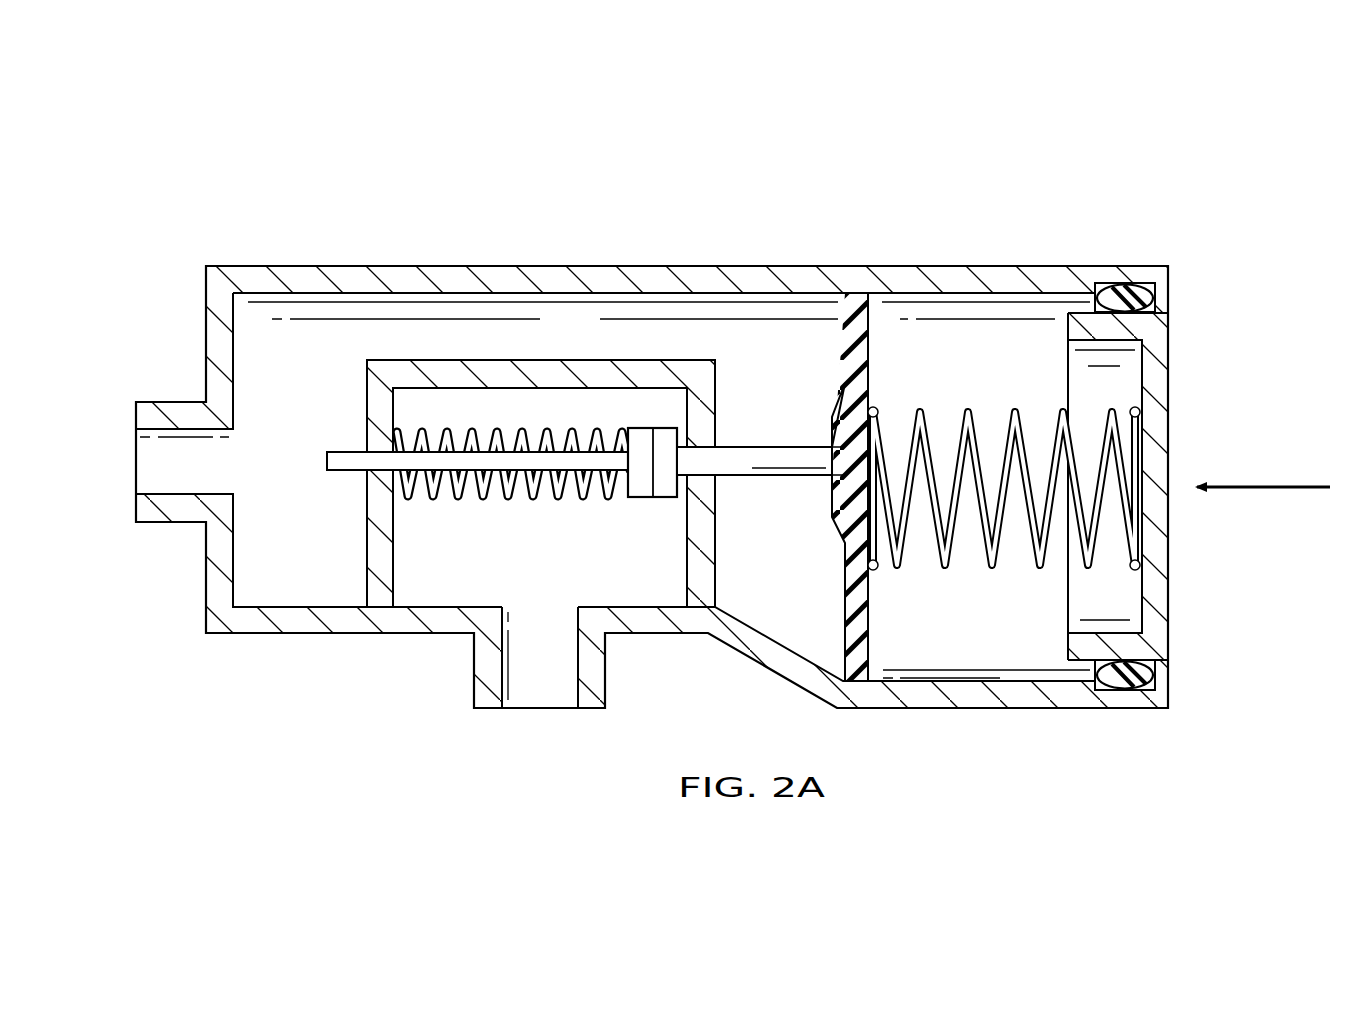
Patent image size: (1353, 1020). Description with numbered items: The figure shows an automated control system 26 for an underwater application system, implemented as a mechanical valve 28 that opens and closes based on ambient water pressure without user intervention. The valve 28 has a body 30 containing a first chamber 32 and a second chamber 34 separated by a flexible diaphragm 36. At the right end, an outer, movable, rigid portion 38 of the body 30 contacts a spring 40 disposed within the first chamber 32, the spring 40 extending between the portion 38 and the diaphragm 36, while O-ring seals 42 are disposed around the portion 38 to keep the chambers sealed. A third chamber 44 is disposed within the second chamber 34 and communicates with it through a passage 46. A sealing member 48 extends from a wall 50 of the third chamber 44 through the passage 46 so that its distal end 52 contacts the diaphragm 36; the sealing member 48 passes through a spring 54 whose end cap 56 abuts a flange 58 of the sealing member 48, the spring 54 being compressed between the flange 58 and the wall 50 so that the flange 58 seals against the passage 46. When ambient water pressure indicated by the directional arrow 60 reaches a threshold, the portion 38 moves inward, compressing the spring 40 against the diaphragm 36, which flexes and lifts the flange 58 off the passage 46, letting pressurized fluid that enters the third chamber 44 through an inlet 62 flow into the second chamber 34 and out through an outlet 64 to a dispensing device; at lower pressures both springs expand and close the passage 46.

The control system 26 is at (700, 419).
The valve 28 is at (652, 469).
The body 30 is at (458, 263).
The first chamber 32 is at (999, 642).
The second chamber 34 is at (748, 332).
The diaphragm 36 is at (862, 487).
The portion 38 is at (1160, 595).
The spring 40 is at (972, 410).
The seals 42 is at (1115, 288).
The third chamber 44 is at (418, 542).
The passage 46 is at (712, 463).
The sealing member 48 is at (765, 446).
The wall 50 is at (542, 456).
The distal end 52 is at (825, 446).
The spring 54 is at (514, 432).
The end cap 56 is at (622, 493).
The flange 58 is at (667, 492).
The directional arrow 60 is at (1263, 457).
The inlet 62 is at (538, 706).
The outlet 64 is at (140, 461).